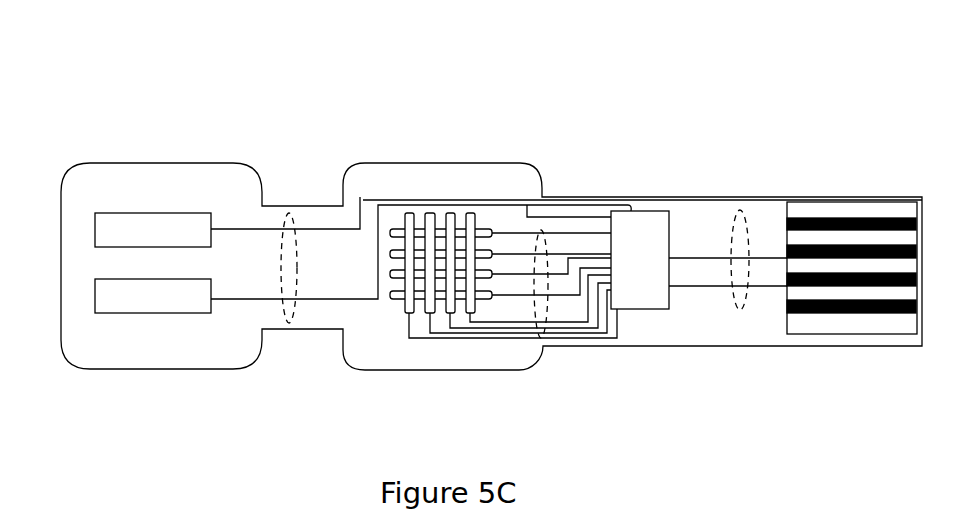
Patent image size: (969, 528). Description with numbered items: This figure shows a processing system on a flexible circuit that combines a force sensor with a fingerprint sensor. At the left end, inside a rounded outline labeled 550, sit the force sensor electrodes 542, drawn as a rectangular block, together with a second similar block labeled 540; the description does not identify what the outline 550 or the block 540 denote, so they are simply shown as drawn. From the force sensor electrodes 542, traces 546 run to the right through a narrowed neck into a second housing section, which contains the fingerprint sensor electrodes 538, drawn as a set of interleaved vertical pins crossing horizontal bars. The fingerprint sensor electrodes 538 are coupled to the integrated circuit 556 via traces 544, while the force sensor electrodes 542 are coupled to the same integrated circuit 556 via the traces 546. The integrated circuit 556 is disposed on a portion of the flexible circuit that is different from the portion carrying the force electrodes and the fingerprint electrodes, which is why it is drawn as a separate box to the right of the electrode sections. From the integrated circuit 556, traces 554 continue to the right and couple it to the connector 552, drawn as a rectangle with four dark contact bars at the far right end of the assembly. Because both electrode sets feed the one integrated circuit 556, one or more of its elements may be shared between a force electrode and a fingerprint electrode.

The connector assembly housing 550 is at (163, 163).
The force sensor electrodes 542 is at (113, 212).
The second electrode contact 540 is at (95, 295).
The traces 546 is at (290, 214).
The traces 544 is at (542, 232).
The fingerprint sensor electrodes 538 is at (400, 291).
The integrated circuit 556 is at (699, 260).
The traces 554 is at (738, 212).
The connector 552 is at (802, 203).